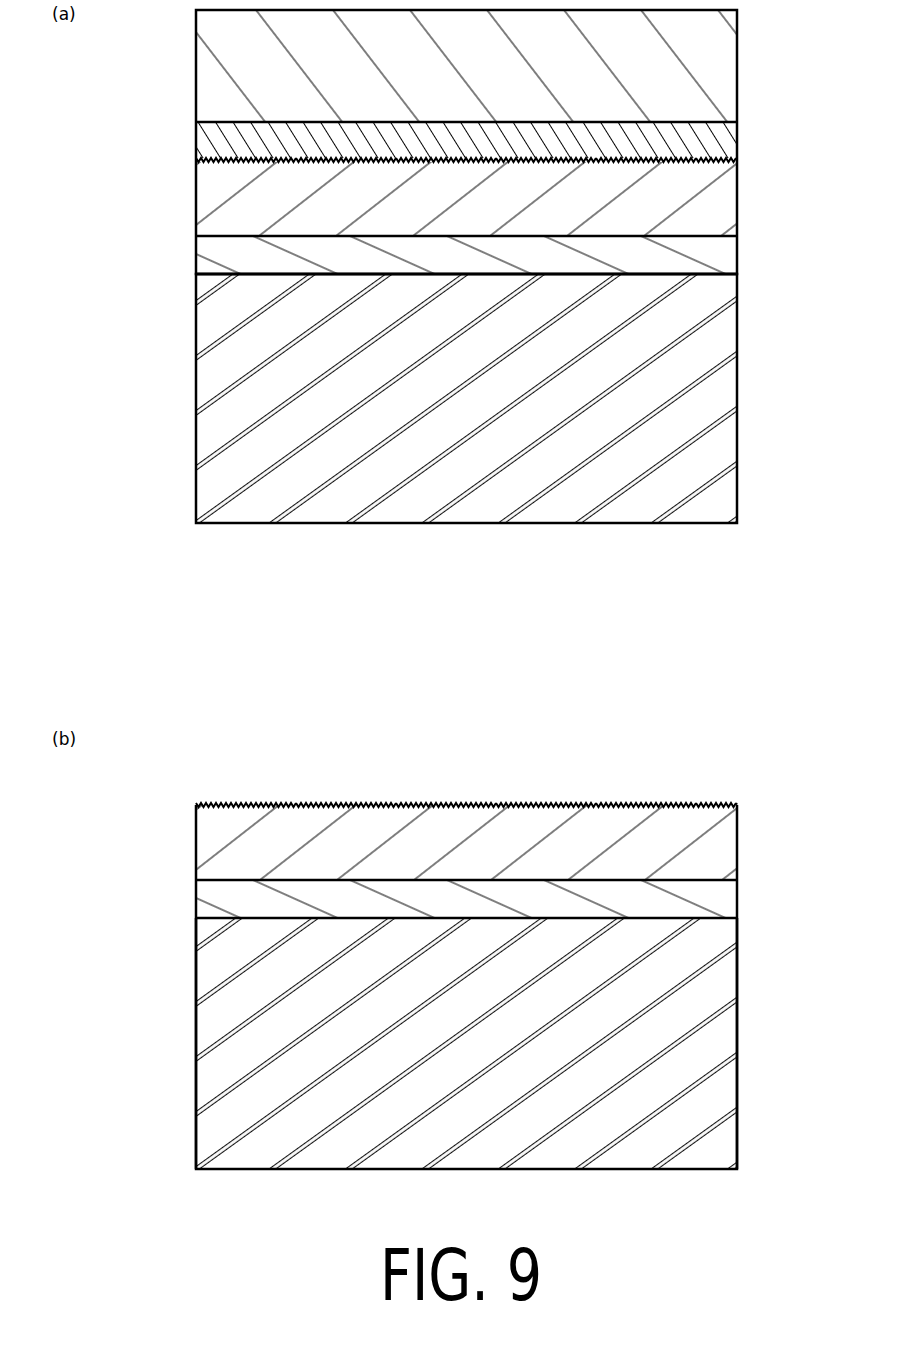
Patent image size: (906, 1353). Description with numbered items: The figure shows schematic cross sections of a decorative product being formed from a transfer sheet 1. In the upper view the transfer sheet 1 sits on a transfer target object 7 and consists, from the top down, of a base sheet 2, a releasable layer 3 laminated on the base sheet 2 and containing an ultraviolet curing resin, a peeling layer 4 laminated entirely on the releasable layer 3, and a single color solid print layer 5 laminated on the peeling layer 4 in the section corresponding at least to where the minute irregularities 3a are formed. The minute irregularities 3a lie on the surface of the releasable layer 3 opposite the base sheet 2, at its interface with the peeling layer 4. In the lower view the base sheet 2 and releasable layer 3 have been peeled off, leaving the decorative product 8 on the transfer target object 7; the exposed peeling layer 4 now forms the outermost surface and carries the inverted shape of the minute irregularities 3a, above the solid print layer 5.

The transfer sheet 1 is at (808, 42).
The base sheet 2 is at (737, 50).
The releasable layer 3 is at (737, 133).
The minute irregularities 3a is at (667, 792).
The peeling layer 4 is at (737, 198).
The single color solid print layer 5 is at (737, 260).
The transfer target object 7 is at (737, 383).
The decorative product 8 is at (473, 721).